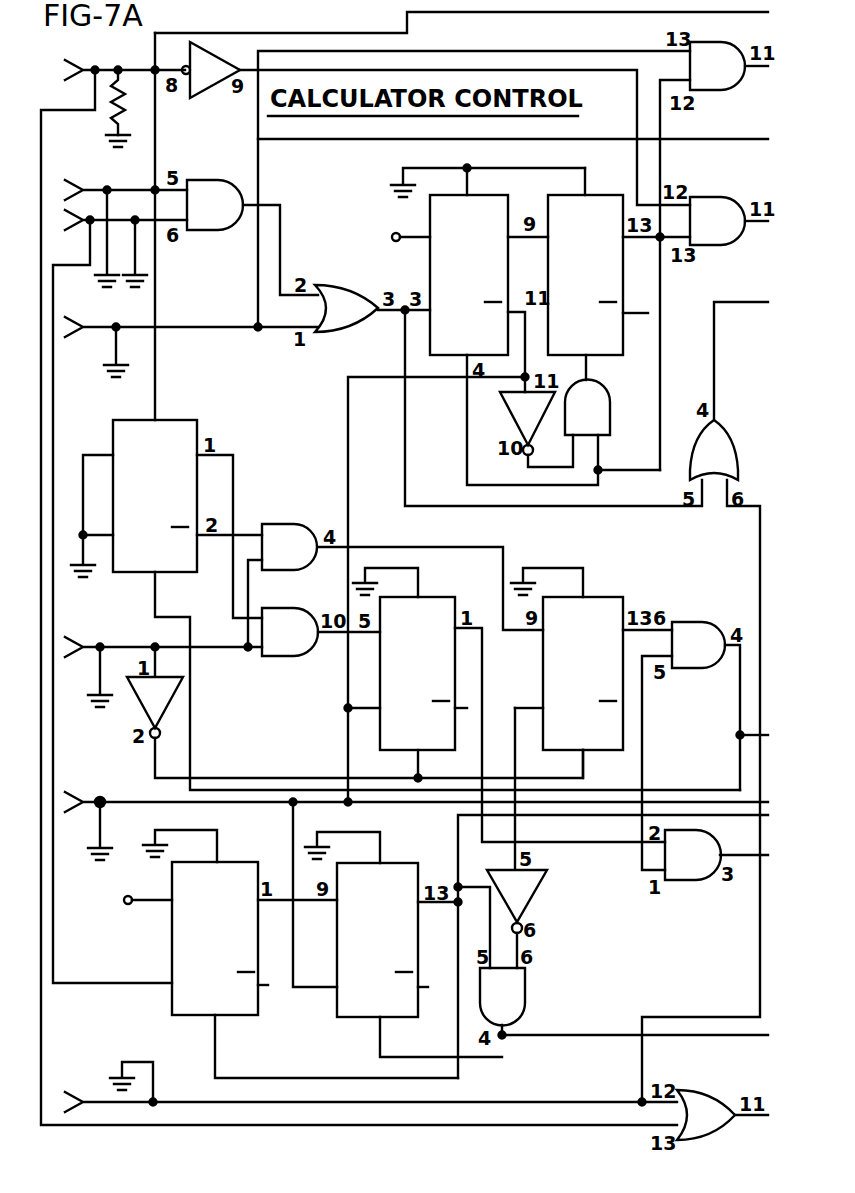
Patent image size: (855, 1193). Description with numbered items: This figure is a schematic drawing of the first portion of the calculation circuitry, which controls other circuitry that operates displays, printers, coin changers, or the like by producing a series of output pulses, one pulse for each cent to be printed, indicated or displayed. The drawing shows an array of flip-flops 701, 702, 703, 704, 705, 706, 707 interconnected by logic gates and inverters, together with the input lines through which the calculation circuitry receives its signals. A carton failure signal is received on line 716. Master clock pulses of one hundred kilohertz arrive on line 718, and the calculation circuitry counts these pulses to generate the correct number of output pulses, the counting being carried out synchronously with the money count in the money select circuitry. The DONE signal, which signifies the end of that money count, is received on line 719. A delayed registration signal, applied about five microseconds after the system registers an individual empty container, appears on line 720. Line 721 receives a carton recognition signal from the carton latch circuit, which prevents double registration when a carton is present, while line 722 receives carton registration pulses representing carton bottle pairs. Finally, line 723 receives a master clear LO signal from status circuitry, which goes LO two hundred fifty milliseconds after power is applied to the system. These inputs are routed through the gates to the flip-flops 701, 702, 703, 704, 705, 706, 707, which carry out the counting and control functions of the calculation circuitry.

The flip-flop 701 is at (183, 434).
The flip-flop 702 is at (432, 274).
The flip-flop 703 is at (612, 338).
The flip-flop 704 is at (387, 731).
The flip-flop 705 is at (610, 605).
The flip-flop 706 is at (172, 952).
The flip-flop 707 is at (402, 877).
The line 716 is at (150, 76).
The line 718 is at (155, 806).
The line 719 is at (88, 650).
The line 720 is at (85, 193).
The line 721 is at (90, 228).
The line 722 is at (100, 332).
The line 723 is at (98, 1100).